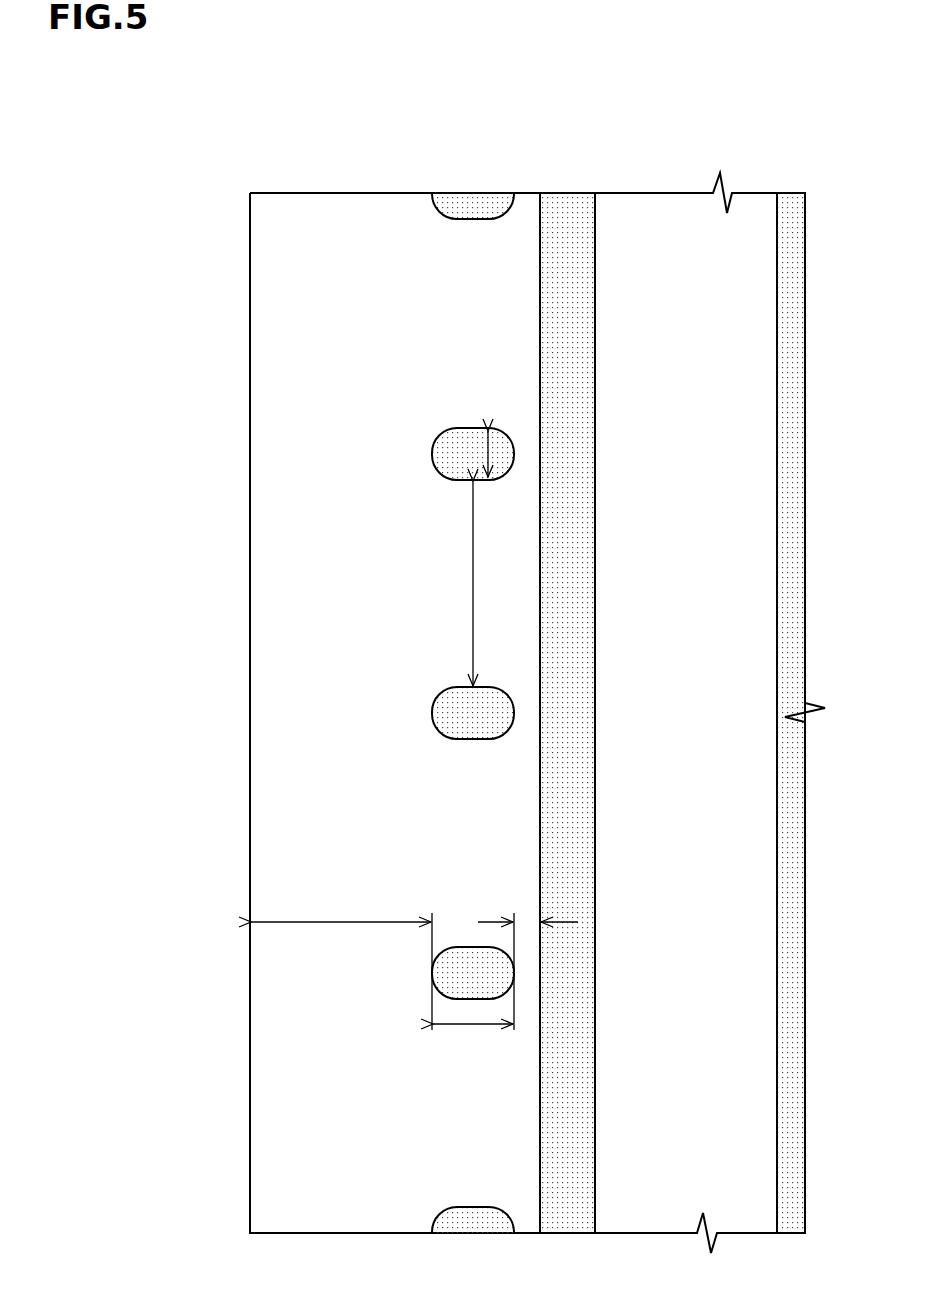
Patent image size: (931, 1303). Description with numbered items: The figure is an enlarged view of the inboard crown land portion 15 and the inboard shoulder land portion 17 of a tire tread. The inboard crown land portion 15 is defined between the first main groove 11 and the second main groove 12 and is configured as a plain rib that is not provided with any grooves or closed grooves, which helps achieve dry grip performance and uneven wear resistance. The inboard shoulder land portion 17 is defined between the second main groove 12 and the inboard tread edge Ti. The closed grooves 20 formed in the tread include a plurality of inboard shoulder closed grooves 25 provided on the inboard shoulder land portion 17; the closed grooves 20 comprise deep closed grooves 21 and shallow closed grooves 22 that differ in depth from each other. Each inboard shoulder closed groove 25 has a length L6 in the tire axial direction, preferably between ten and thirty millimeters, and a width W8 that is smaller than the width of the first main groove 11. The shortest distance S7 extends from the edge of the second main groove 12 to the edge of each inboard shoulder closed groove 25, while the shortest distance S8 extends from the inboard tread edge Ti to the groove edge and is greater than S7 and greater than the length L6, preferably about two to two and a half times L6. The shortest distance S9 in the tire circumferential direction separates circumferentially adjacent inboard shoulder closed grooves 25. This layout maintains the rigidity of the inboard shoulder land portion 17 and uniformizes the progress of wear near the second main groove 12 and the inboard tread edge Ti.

The inboard tread edge Ti is at (250, 215).
The inboard shoulder land portion 17 is at (388, 247).
The second main groove 12 is at (567, 232).
The inboard crown land portion 15 is at (673, 248).
The first main groove 11 is at (789, 247).
The closed grooves 20 is at (460, 457).
The inboard shoulder closed grooves 25 is at (279, 843).
The deep closed grooves 21 is at (470, 711).
The shallow closed grooves 22 is at (473, 973).
The width of inboard shoulder closed grooves W8 is at (487, 452).
The shortest circumferential distance between adjacent inboard shoulder closed groov S9 is at (473, 583).
The shortest distance from inboard tread edge to inboard shoulder closed groove edge S8 is at (382, 959).
The shortest distance from second main groove edge to inboard shoulder closed groove S7 is at (528, 905).
The length of inboard shoulder closed grooves L6 is at (473, 1042).